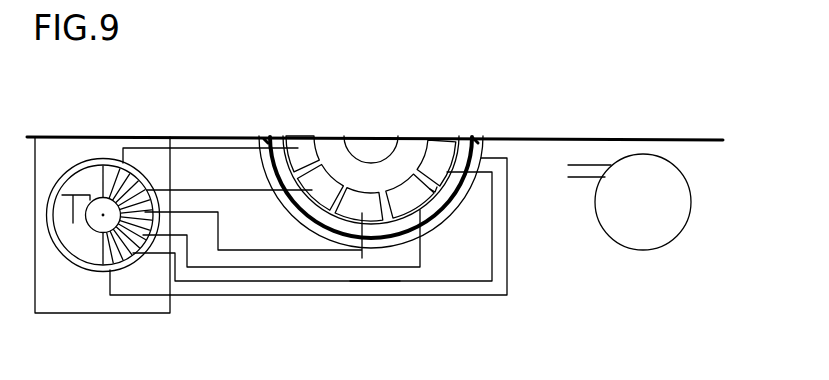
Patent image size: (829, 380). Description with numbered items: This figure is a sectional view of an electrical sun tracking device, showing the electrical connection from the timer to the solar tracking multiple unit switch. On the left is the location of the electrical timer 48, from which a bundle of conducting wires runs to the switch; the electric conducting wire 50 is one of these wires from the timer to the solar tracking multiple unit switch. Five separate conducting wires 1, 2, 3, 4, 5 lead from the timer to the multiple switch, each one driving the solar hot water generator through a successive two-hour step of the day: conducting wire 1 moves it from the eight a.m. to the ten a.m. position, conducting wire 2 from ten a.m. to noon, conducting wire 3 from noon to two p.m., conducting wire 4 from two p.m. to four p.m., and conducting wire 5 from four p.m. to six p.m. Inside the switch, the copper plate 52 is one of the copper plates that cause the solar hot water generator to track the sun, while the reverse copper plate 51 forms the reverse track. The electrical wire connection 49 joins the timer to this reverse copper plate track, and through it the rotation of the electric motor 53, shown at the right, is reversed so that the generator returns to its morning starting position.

The electrical timer 48 is at (62, 314).
The electrical wire connection 49 is at (297, 296).
The electric conducting wire 50 is at (360, 283).
The reverse copper plate 51 is at (432, 226).
The copper plate 52 is at (297, 221).
The electric motor 53 is at (629, 220).
The conducting wire 1 is at (207, 150).
The conducting wire 2 is at (201, 188).
The conducting wire 3 is at (211, 212).
The conducting wire 4 is at (220, 266).
The conducting wire 5 is at (174, 281).